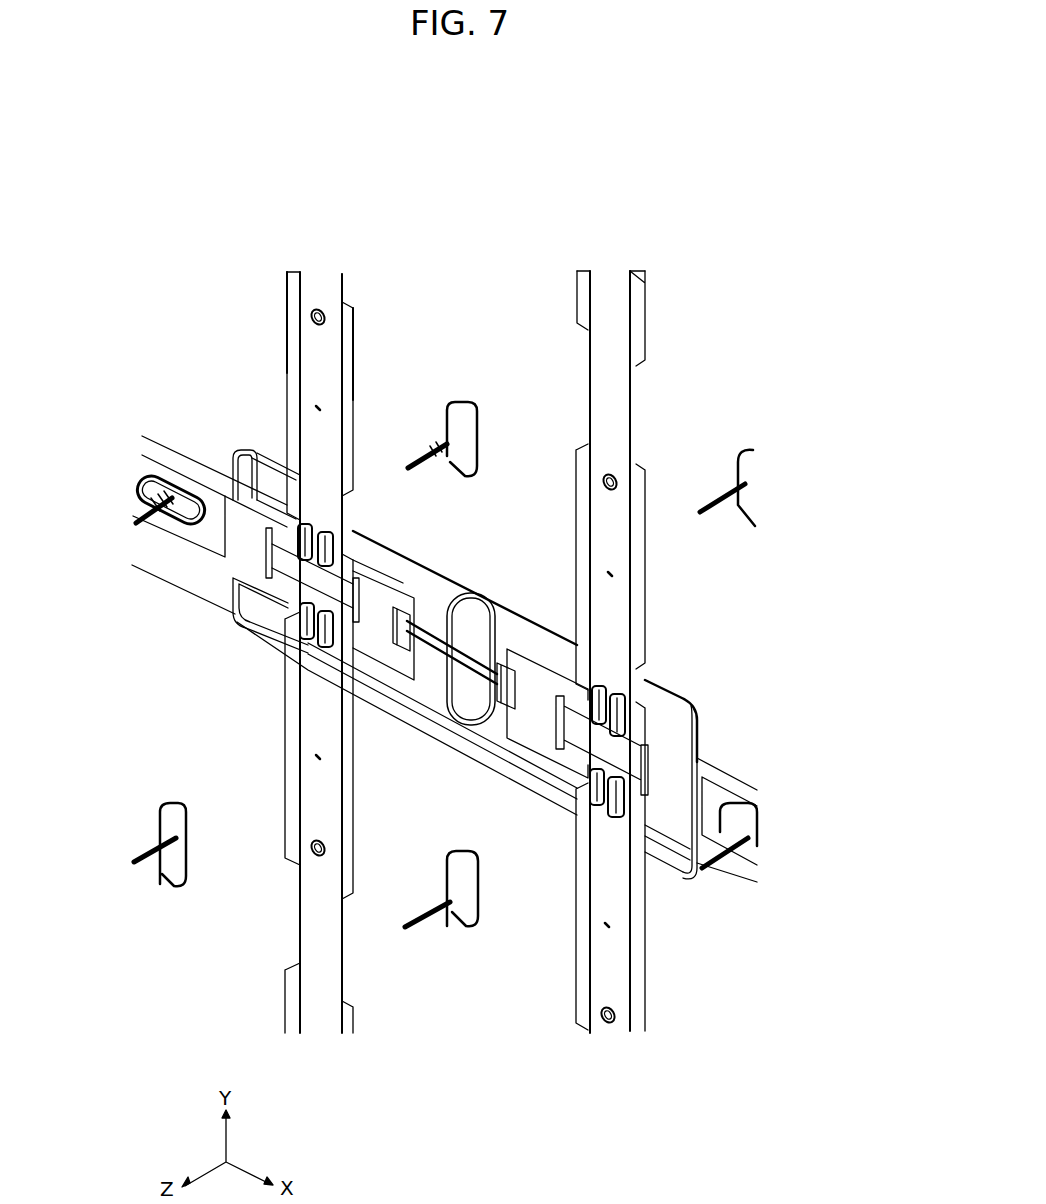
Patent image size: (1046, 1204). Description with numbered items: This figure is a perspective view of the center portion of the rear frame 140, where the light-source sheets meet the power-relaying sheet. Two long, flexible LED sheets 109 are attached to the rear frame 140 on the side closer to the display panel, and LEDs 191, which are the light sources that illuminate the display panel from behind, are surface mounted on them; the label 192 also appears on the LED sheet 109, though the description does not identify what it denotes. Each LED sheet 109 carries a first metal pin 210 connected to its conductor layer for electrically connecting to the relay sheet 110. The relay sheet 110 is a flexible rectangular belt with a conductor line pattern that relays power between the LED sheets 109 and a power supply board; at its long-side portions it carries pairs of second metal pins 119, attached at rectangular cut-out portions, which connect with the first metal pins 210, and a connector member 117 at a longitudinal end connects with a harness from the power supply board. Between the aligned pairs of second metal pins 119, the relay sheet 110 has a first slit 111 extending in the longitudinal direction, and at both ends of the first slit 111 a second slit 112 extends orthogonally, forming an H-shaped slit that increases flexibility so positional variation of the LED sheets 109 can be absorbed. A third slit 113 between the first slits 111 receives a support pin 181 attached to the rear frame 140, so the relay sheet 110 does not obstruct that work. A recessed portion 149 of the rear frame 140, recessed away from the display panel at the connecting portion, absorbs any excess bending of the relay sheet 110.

The rear frame 140 is at (528, 285).
The LED sheet 109 is at (307, 367).
The flange 192 is at (343, 320).
The LED 191 is at (324, 408).
The recessed portion 149 is at (513, 627).
The third slit 113 is at (213, 500).
The support pin 181 is at (153, 497).
The first metal pin 210 is at (308, 522).
The second slit 112 is at (355, 597).
The first slit 111 is at (320, 590).
The second metal pin 119 is at (292, 615).
The relay sheet 110 is at (381, 651).
The connector member 117 is at (422, 651).